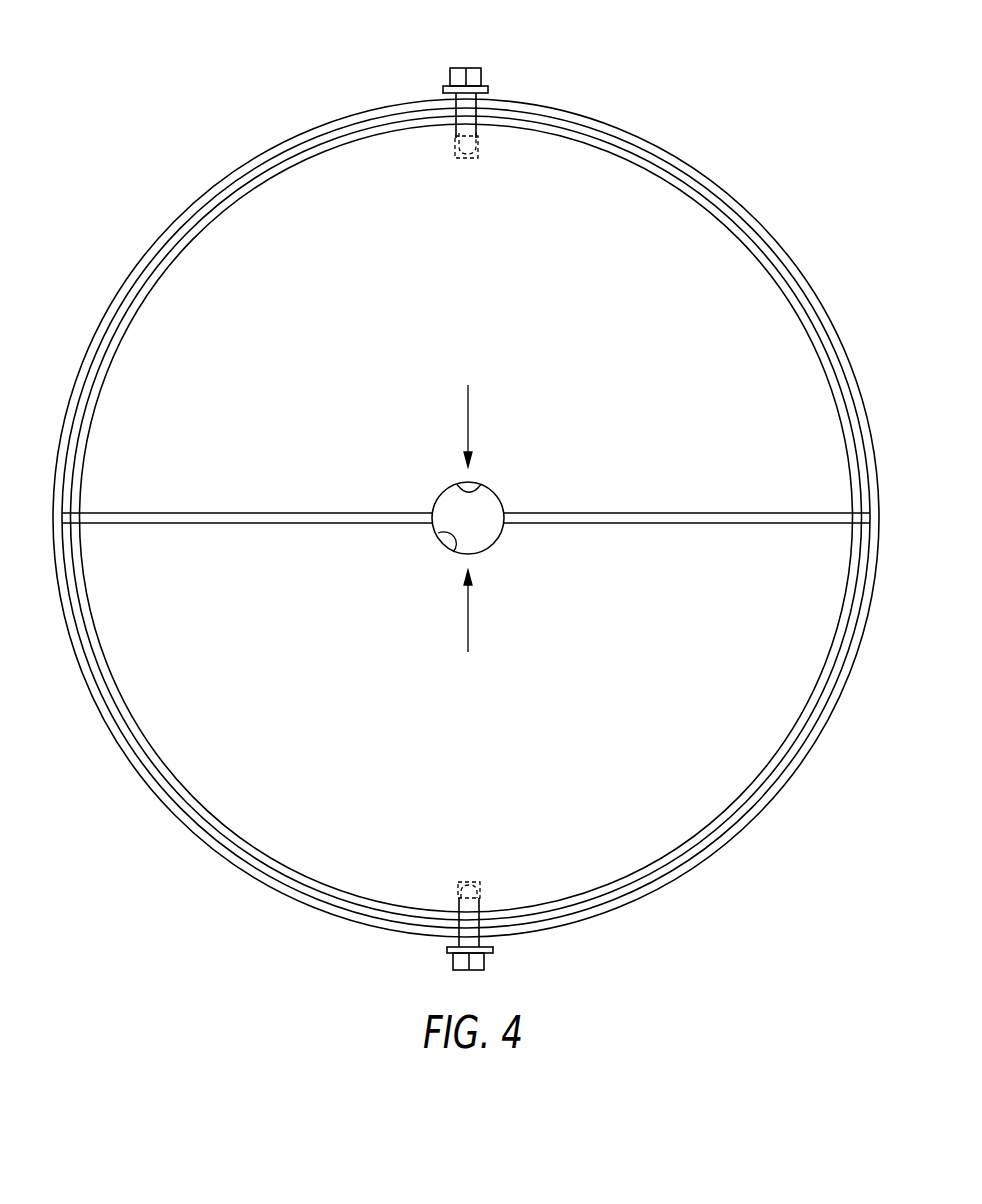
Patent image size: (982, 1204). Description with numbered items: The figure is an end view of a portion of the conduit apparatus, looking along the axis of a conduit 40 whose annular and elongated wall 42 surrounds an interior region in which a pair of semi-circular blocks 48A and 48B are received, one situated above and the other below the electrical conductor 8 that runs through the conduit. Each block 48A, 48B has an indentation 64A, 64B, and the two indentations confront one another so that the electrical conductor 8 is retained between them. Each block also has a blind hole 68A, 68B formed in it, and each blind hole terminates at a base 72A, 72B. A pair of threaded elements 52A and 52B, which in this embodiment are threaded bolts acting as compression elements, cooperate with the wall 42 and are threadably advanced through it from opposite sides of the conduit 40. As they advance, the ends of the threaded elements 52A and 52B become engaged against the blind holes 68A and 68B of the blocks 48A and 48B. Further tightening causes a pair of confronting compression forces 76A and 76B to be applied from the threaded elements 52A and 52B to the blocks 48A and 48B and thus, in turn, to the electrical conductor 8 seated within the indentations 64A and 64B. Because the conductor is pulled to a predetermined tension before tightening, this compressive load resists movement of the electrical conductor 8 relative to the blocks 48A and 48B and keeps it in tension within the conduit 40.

The electrical conductor 8 is at (508, 515).
The conduit 40 is at (622, 130).
The wall 42 is at (672, 157).
The block 48A is at (658, 840).
The block 48B is at (703, 235).
The threaded element 52A is at (472, 970).
The threaded element 52B is at (475, 68).
The indentation 64A is at (452, 552).
The indentation 64B is at (480, 485).
The blind hole 68A is at (483, 892).
The blind hole 68B is at (455, 145).
The base 72A is at (468, 882).
The base 72B is at (468, 160).
The compression force 76A is at (468, 608).
The compression force 76B is at (468, 413).